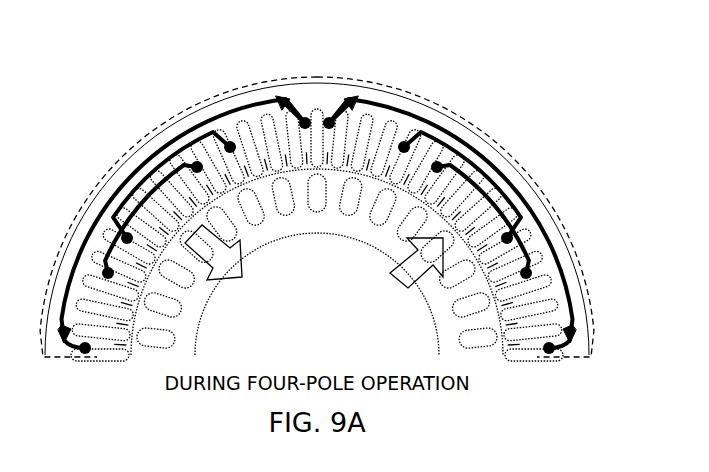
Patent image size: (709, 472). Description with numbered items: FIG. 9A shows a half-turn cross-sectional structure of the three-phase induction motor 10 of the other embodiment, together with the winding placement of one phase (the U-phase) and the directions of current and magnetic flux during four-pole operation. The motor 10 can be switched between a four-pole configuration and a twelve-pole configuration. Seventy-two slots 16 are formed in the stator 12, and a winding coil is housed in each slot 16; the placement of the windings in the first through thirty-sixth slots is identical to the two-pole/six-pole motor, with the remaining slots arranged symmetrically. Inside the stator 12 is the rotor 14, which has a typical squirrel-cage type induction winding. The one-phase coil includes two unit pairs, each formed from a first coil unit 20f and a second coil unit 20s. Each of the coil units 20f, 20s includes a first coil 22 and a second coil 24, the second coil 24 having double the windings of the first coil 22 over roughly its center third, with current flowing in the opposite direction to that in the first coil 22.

The three-phase induction motor 10 is at (318, 68).
The stator 12 is at (580, 355).
The rotor 14 is at (275, 228).
The slot 16 is at (346, 261).
The first coil unit 20f is at (240, 80).
The second coil unit 20s is at (394, 80).
The first coil 22 is at (182, 112).
The second coil 24 is at (110, 180).